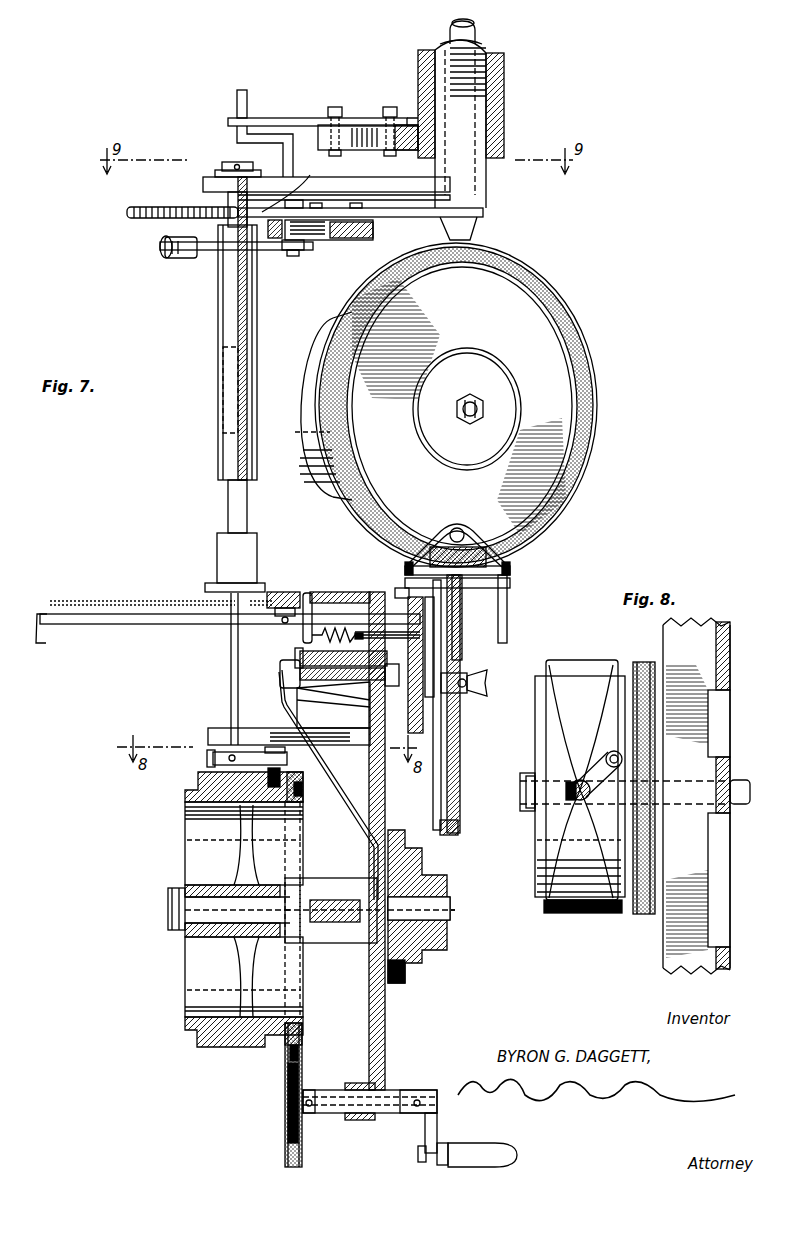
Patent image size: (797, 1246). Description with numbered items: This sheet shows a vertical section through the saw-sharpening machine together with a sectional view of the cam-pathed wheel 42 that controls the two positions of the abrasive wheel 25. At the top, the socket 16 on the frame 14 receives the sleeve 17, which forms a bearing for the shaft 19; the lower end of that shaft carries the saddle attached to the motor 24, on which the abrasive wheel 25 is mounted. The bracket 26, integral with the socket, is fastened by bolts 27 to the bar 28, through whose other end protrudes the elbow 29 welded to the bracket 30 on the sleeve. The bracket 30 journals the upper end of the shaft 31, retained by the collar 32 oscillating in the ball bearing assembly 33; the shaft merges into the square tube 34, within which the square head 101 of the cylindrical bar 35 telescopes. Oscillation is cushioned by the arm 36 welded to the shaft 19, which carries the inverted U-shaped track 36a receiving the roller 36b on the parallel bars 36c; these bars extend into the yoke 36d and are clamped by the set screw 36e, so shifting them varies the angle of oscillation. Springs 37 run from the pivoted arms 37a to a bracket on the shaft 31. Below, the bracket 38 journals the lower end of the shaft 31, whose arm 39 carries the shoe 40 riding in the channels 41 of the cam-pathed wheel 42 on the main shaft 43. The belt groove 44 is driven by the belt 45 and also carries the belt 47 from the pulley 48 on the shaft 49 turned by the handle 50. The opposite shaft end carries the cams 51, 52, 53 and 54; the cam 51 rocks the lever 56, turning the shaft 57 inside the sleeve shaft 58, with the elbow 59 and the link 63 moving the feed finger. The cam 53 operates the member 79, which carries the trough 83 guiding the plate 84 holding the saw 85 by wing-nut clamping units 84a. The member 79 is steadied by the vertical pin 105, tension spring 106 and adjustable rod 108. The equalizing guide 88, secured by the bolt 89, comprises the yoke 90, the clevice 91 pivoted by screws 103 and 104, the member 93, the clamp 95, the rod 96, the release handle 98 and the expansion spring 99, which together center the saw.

In FIG. 7, the frame 14 is at (385, 1060).
In FIG. 8, the frame 14 is at (730, 645).
In FIG. 7, the socket 16 is at (505, 101).
In FIG. 7, the sleeve 17 is at (505, 78).
In FIG. 7, the shaft 19 is at (478, 31).
In FIG. 7, the motor 24 is at (322, 322).
In FIG. 7, the abrasive wheel 25 is at (598, 388).
In FIG. 7, the bracket 26 is at (360, 125).
In FIG. 7, the bolts 27 is at (335, 107).
In FIG. 7, the bar 28 is at (272, 118).
In FIG. 7, the elbow 29 is at (238, 95).
In FIG. 7, the bracket 30 is at (375, 183).
In FIG. 7, the shaft 31 is at (230, 194).
In FIG. 8, the shaft 31 is at (580, 805).
In FIG. 7, the collar 32 is at (230, 162).
In FIG. 7, the ball bearing assembly 33 is at (215, 172).
In FIG. 7, the square shaped tube 34 is at (218, 322).
In FIG. 7, the cylindrical bar 35 is at (228, 513).
In FIG. 7, the arm 36 is at (394, 217).
In FIG. 7, the inverted U-shaped track 36a is at (350, 232).
In FIG. 7, the roller 36b is at (300, 250).
In FIG. 7, the parallel bars 36c is at (270, 240).
In FIG. 7, the yoke 36d is at (193, 250).
In FIG. 7, the set screw 36e is at (160, 248).
In FIG. 7, the springs 37 is at (147, 206).
In FIG. 7, the arm 37a is at (295, 184).
In FIG. 7, the bracket 38 is at (215, 735).
In FIG. 7, the arm 39 is at (213, 759).
In FIG. 8, the arm 39 is at (582, 779).
In FIG. 7, the shoe 40 is at (282, 772).
In FIG. 8, the shoe 40 is at (610, 752).
In FIG. 7, the channels 41 is at (288, 1020).
In FIG. 8, the channels 41 is at (622, 852).
In FIG. 7, the cam pathed wheel 42 is at (177, 862).
In FIG. 8, the cam pathed wheel 42 is at (584, 652).
In FIG. 7, the main shaft 43 is at (168, 908).
In FIG. 8, the main shaft 43 is at (742, 782).
In FIG. 7, the belt groove 44 is at (302, 1038).
In FIG. 8, the belt groove 44 is at (643, 662).
In FIG. 7, the belt 45 is at (305, 778).
In FIG. 8, the belt 45 is at (643, 914).
In FIG. 7, the belt 47 is at (305, 792).
In FIG. 7, the pulley 48 is at (286, 1100).
In FIG. 7, the shaft 49 is at (366, 1118).
In FIG. 7, the handle 50 is at (438, 1145).
In FIG. 7, the cam 51 is at (375, 952).
In FIG. 7, the cam 52 is at (400, 983).
In FIG. 7, the cam 53 is at (425, 975).
In FIG. 7, the cam 54 is at (442, 962).
In FIG. 7, the lever 56 is at (318, 710).
In FIG. 7, the shaft 57 is at (285, 676).
In FIG. 7, the sleeve shaft 58 is at (300, 660).
In FIG. 7, the elbow 59 is at (367, 703).
In FIG. 7, the link 63 is at (383, 705).
In FIG. 7, the member 79 is at (425, 716).
In FIG. 7, the trough 83 is at (460, 762).
In FIG. 7, the plate or carriage 84 is at (464, 786).
In FIG. 7, the wing-nut clamping units 84a is at (487, 683).
In FIG. 7, the saw 85 is at (460, 657).
In FIG. 7, the equalizing guide 88 is at (460, 519).
In FIG. 7, the bolt 89 is at (462, 641).
In FIG. 7, the yoke 90 is at (436, 548).
In FIG. 7, the equalizing clevice 91 is at (478, 548).
In FIG. 7, the member 93 is at (510, 586).
In FIG. 7, the clamp 95 is at (405, 570).
In FIG. 7, the rod 96 is at (516, 590).
In FIG. 7, the release handle 98 is at (507, 640).
In FIG. 7, the expansion spring 99 is at (466, 525).
In FIG. 7, the square head 101 is at (223, 407).
In FIG. 7, the screw 103 is at (515, 582).
In FIG. 7, the screw 104 is at (400, 590).
In FIG. 7, the vertical pin 105 is at (298, 592).
In FIG. 7, the tension spring 106 is at (328, 628).
In FIG. 7, the manually adjustable rod 108 is at (127, 624).